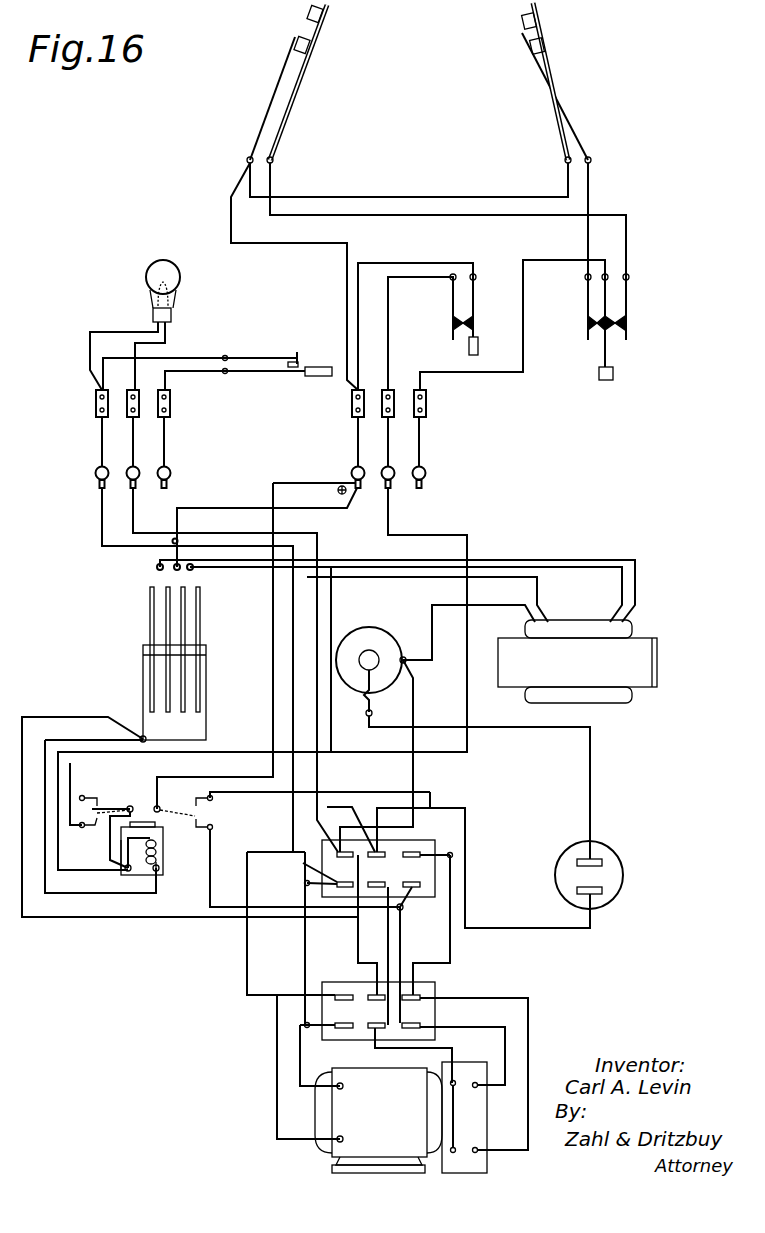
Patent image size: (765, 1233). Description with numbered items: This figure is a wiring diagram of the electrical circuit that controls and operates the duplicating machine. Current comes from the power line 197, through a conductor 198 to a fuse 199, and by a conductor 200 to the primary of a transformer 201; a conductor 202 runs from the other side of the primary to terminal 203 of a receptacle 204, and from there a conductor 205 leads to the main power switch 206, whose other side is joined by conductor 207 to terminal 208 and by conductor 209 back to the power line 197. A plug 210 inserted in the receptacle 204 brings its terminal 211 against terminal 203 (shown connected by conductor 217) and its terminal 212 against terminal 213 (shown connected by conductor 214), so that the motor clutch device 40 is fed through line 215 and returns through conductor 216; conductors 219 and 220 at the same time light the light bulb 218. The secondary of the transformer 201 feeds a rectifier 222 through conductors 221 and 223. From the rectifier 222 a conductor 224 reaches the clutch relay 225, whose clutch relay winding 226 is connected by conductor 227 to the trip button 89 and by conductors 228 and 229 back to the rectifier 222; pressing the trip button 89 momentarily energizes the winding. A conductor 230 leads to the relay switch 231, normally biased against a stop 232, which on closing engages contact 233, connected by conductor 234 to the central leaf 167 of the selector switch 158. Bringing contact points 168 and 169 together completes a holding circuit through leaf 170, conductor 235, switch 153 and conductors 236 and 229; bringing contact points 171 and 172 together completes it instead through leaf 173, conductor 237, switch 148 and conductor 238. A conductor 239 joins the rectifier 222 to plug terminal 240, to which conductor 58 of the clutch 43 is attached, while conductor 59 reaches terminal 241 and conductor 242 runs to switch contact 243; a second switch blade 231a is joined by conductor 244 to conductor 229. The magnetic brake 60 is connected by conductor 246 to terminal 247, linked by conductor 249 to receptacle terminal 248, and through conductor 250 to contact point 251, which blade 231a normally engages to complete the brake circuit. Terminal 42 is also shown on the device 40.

The switch 153 is at (300, 84).
The switch 148 is at (556, 100).
The conductor 238 is at (478, 188).
The conductor 237 is at (592, 188).
The conductor 235 is at (608, 214).
The conductor 236 is at (306, 243).
The conductor 228 is at (450, 252).
The conductor 227 is at (390, 323).
The trip button 89 is at (485, 316).
The conductor 234 is at (547, 252).
The leaf 173 is at (590, 303).
The central leaf 167 is at (596, 322).
The contact point 172 is at (590, 336).
The leaf 170 is at (632, 289).
The contact point 169 is at (630, 312).
The selector switch 158 is at (639, 328).
The contact point 168 is at (612, 342).
The contact point 171 is at (596, 342).
The light bulb 218 is at (146, 270).
The conductor line 220 is at (168, 338).
The conductor 219 is at (90, 342).
The conductor 207 is at (198, 361).
The main power switch 206 is at (270, 375).
The conductor 229 is at (225, 499).
The conductor 205 is at (292, 645).
The conductor 244 is at (272, 614).
The conductor 223 is at (213, 569).
The conductor 221 is at (637, 585).
The conductor 202 is at (540, 590).
The conductor 200 is at (430, 612).
The fuse 199 is at (397, 632).
The transformer 201 is at (572, 622).
The conductor 198 is at (592, 756).
The power line 197 is at (612, 850).
The conductor 209 is at (470, 893).
The conductor 214 is at (416, 778).
The conductor 250 is at (346, 792).
The rectifier 222 is at (143, 663).
The conductor 224 is at (70, 717).
The conductor 239 is at (95, 717).
The clutch relay 225 is at (165, 877).
The clutch relay winding 226 is at (160, 858).
The conductor 230 is at (120, 852).
The relay switch 231 is at (105, 809).
The stop 232 is at (97, 793).
The electrical contact 233 is at (79, 833).
The second switch blade 231a is at (172, 806).
The contact point 251 is at (213, 798).
The switch contact 243 is at (213, 827).
The receptacle 204 is at (440, 850).
The terminal 213 is at (330, 869).
The terminal 208 is at (358, 847).
The terminal 248 is at (426, 879).
The terminal 203 is at (338, 889).
The conductor 217 is at (301, 944).
The conductor 242 is at (403, 950).
The conductor 249 is at (453, 945).
The plug 210 is at (438, 985).
The terminal 212 is at (343, 993).
The terminal 211 is at (340, 1017).
The terminal 240 is at (372, 1032).
The terminal 247 is at (422, 1003).
The conductor 246 is at (530, 1036).
The terminal 241 is at (425, 1026).
The conductor 59 is at (494, 1032).
The conductor 58 is at (455, 1050).
The conductor 216 is at (301, 1042).
The line 215 is at (276, 1090).
The motor terminal 42 is at (318, 1110).
The motor clutch device 40 is at (388, 1122).
The clutch 43 is at (478, 1088).
The magnetic brake 60 is at (470, 1150).